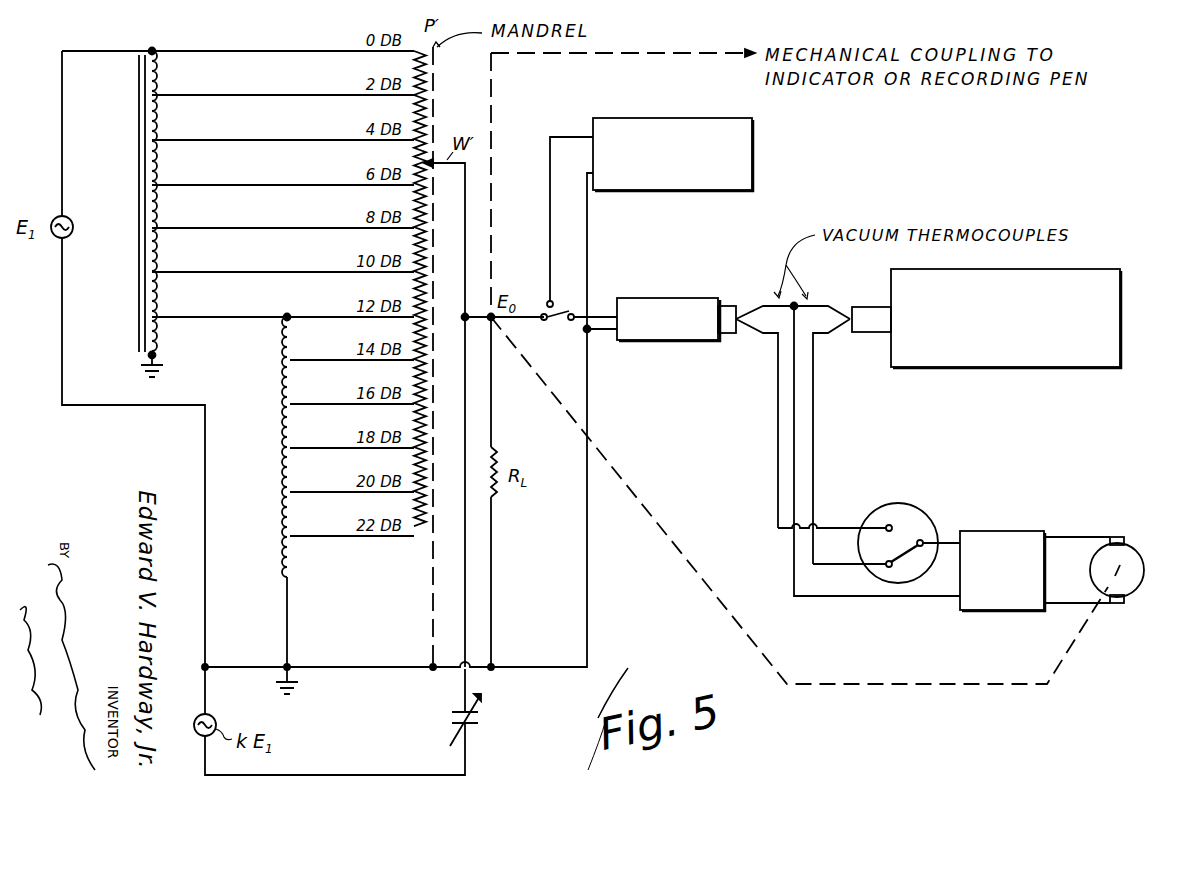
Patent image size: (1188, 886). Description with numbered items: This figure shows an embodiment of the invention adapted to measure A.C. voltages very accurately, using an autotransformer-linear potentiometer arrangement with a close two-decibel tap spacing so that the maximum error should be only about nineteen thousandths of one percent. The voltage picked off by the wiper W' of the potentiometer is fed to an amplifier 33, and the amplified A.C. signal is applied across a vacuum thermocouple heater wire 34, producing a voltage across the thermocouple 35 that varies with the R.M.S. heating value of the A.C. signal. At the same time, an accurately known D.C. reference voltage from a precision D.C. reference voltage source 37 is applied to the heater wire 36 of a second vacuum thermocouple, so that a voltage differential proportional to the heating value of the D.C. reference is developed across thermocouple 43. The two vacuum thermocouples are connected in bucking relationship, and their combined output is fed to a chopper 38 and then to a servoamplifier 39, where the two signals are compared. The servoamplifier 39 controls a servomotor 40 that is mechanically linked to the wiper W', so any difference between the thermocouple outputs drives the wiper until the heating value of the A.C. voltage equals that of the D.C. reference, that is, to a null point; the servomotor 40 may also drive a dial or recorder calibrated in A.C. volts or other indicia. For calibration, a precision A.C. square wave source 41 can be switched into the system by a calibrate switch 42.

The amplifier 33 is at (660, 296).
The vacuum thermocouple heater wire 34 is at (732, 304).
The thermocouple 35 is at (748, 306).
The heater wire 36 is at (856, 305).
The precision D.C. reference voltage source 37 is at (1097, 368).
The chopper 38 is at (931, 515).
The servoamplifier 39 is at (1007, 531).
The servomotor 40 is at (1128, 545).
The precision A.C. square wave source 41 is at (752, 170).
The calibrate switch 42 is at (553, 307).
The thermocouple 43 is at (828, 304).